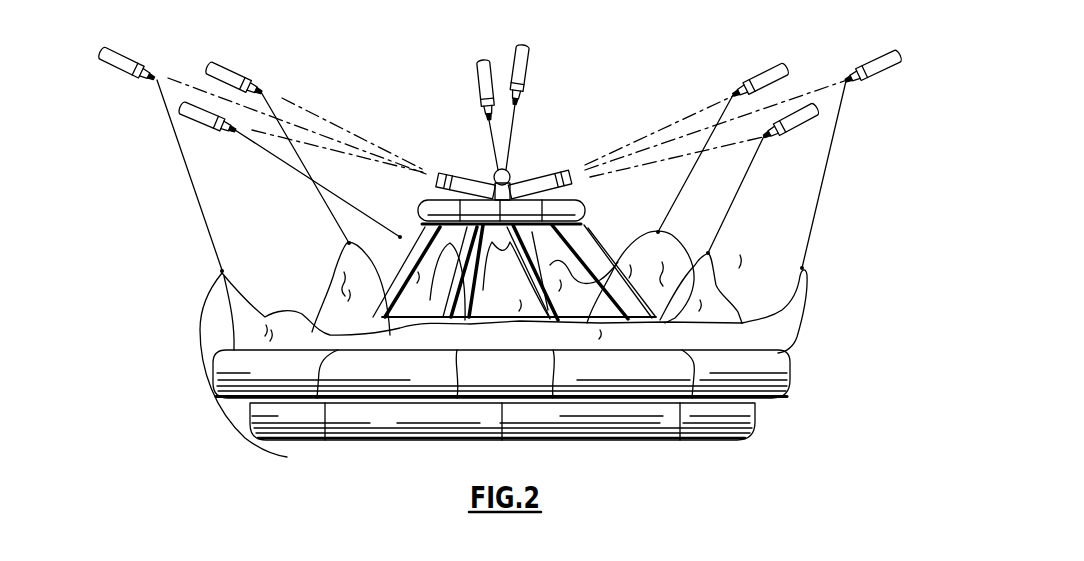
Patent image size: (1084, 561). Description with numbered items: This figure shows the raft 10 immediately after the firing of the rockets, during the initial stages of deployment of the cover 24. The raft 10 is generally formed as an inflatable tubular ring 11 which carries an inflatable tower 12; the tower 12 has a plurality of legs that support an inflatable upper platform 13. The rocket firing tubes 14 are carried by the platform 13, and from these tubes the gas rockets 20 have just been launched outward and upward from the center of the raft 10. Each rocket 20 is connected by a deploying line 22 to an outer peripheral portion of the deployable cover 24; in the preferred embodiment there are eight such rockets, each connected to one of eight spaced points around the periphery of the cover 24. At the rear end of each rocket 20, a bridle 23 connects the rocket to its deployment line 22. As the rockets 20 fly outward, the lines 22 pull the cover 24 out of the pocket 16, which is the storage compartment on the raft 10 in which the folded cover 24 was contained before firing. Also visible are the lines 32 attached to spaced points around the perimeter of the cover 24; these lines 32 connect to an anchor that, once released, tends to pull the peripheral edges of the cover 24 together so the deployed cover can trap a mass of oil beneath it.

The raft 10 is at (535, 415).
The inflatable tubular ring 11 is at (630, 443).
The inflatable tower 12 is at (588, 237).
The inflatable upper platform 13 is at (584, 201).
The rocket firing tubes 14 is at (540, 172).
The pocket 16 is at (789, 371).
The rockets 20 is at (776, 65).
The lines 22 is at (201, 211).
The bridle 23 is at (745, 85).
The cover 24 is at (806, 306).
The lines 32 is at (205, 307).